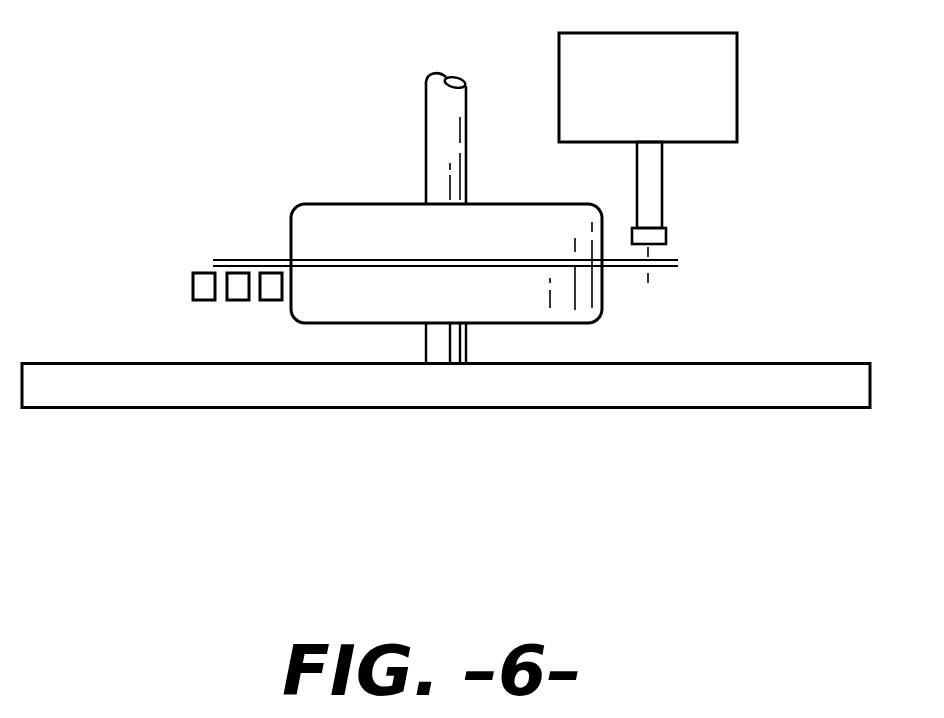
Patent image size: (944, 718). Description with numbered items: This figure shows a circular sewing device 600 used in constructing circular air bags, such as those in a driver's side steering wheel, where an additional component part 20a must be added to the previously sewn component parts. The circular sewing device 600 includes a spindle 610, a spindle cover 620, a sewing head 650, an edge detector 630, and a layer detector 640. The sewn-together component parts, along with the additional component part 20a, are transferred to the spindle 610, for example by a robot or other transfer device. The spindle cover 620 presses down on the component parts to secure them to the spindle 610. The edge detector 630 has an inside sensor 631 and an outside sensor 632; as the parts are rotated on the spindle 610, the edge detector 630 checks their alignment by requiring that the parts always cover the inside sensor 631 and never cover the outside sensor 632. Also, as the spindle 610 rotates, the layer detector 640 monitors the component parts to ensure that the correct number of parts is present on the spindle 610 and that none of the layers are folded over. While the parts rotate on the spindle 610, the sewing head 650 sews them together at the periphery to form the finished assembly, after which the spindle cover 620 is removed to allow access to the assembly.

The circular sewing device 600 is at (673, 457).
The spindle 610 is at (602, 287).
The spindle cover 620 is at (317, 203).
The sewing head 650 is at (663, 197).
The additional component part 20a is at (228, 260).
The edge detector 630 is at (154, 415).
The inside sensor 631 is at (237, 300).
The outside sensor 632 is at (204, 300).
The layer detector 640 is at (270, 300).